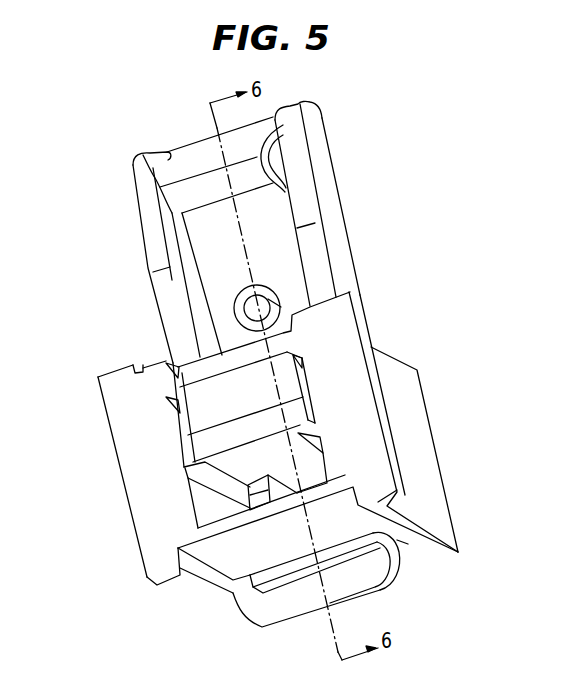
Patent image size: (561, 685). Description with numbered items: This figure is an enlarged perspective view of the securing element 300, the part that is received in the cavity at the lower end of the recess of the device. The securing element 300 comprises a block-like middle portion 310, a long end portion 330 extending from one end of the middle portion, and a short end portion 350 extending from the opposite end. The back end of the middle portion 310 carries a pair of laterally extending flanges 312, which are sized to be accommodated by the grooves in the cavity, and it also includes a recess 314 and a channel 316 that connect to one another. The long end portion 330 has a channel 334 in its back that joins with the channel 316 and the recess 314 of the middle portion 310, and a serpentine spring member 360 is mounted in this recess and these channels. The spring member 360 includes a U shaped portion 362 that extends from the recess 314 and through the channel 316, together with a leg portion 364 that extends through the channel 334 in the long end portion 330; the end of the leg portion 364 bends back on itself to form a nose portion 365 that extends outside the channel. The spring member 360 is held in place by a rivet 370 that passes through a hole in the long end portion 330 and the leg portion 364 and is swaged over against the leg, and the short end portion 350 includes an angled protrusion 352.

The securing element 300 is at (390, 347).
The middle portion 310 is at (410, 404).
The laterally extending flanges 312 is at (121, 484).
The recess 314 is at (205, 516).
The channel 316 is at (160, 373).
The long end portion 330 is at (340, 181).
The channel 334 is at (184, 296).
The short end portion 350 is at (380, 595).
The angled protrusion 352 is at (403, 542).
The serpentine spring member 360 is at (275, 240).
The U shaped portion 362 is at (205, 420).
The leg portion 364 is at (192, 238).
The nose portion 365 is at (142, 166).
The boss 370 is at (265, 290).